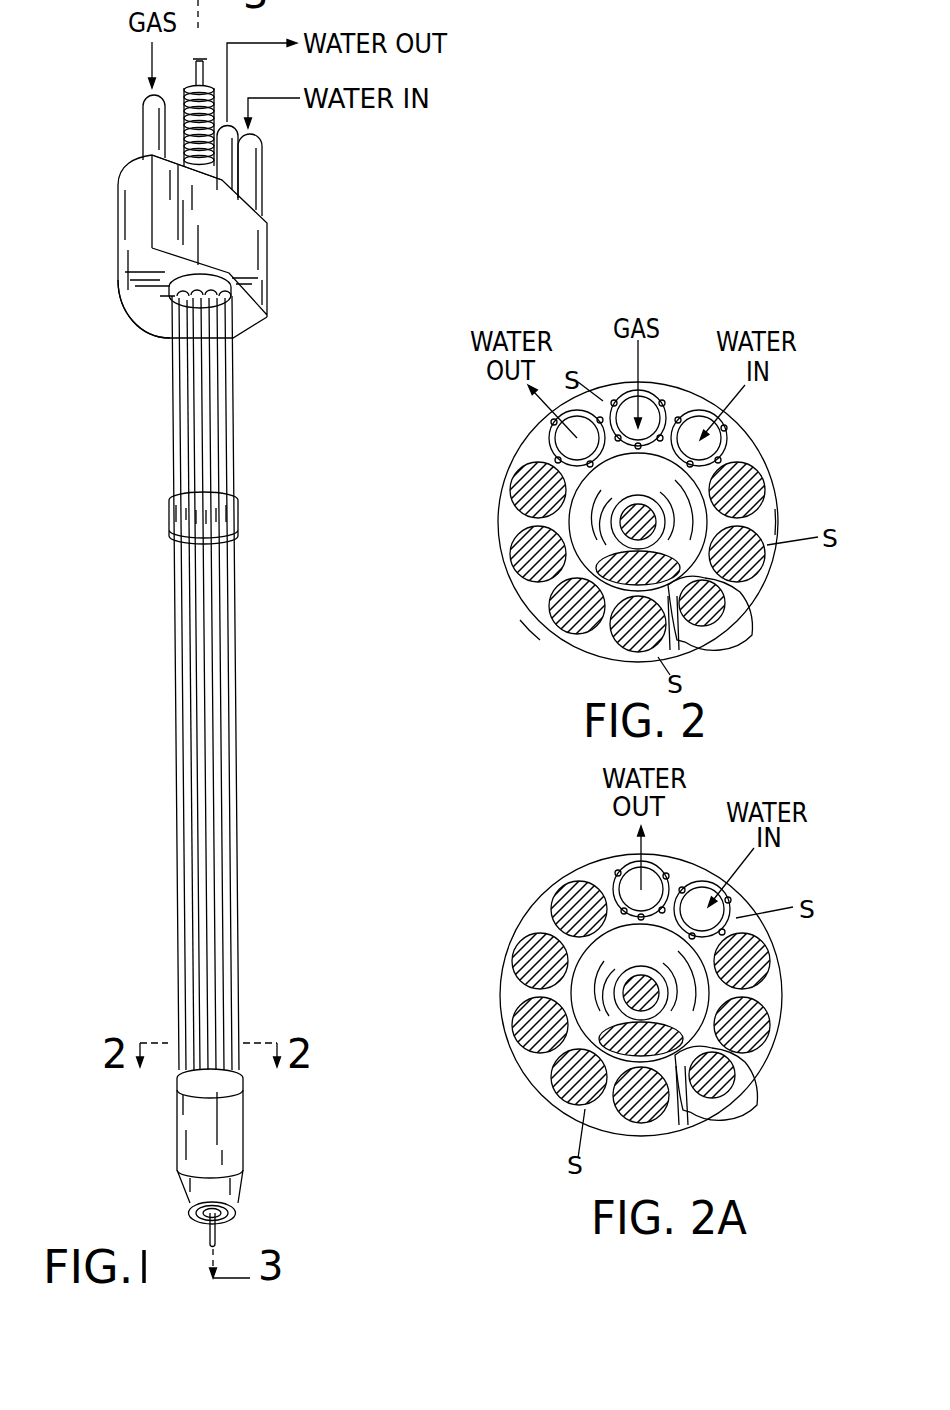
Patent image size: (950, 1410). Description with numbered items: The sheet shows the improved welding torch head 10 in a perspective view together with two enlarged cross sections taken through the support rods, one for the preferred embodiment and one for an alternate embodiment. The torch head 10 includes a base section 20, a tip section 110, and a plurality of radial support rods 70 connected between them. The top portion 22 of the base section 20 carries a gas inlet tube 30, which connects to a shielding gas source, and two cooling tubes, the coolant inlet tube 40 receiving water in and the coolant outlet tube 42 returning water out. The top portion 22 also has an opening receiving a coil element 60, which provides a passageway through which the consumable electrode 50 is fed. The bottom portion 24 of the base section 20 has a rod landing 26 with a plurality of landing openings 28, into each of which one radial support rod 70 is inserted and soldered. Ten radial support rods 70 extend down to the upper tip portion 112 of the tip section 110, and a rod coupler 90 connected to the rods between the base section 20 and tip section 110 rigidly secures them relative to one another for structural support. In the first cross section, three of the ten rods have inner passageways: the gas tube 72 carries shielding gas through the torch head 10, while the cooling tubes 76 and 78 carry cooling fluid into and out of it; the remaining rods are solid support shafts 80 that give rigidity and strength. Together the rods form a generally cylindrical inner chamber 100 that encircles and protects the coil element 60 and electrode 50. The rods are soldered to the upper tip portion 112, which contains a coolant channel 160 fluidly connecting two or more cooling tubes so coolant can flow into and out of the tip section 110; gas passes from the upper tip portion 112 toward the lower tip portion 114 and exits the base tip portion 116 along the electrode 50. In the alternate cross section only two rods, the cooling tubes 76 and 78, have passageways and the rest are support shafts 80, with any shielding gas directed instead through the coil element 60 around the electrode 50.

In FIG. 1, the torch head 10 is at (95, 608).
In FIG. 1, the base section 20 is at (209, 247).
In FIG. 1, the top portion 22 is at (125, 170).
In FIG. 1, the bottom portion 24 is at (130, 303).
In FIG. 1, the rod landing 26 is at (228, 286).
In FIG. 1, the landing openings 28 is at (190, 297).
In FIG. 1, the gas inlet tube 30 is at (143, 107).
In FIG. 1, the coolant inlet tube 40 is at (253, 185).
In FIG. 1, the coolant outlet tube 42 is at (228, 162).
In FIG. 1, the electrode 50 is at (203, 72).
In FIG. 2, the electrode 50 is at (648, 520).
In FIG. 2A, the electrode 50 is at (660, 992).
In FIG. 1, the coil element 60 is at (185, 133).
In FIG. 2, the coil element 60 is at (685, 540).
In FIG. 2A, the coil element 60 is at (585, 989).
In FIG. 1, the radial support rods 70 is at (242, 425).
In FIG. 2, the radial support rods 70 is at (787, 505).
In FIG. 2, the gas tube 72 is at (624, 398).
In FIG. 2, the cooling tube 76 is at (693, 411).
In FIG. 2A, the cooling tube 76 is at (728, 896).
In FIG. 2, the cooling tube 78 is at (548, 452).
In FIG. 2A, the cooling tube 78 is at (658, 858).
In FIG. 2, the support shaft 80 is at (520, 533).
In FIG. 2A, the support shaft 80 is at (533, 944).
In FIG. 1, the rod coupler 90 is at (238, 520).
In FIG. 2, the inner chamber 100 is at (681, 611).
In FIG. 1, the tip section 110 is at (216, 1151).
In FIG. 2, the tip section 110 is at (492, 597).
In FIG. 2A, the tip section 110 is at (490, 1035).
In FIG. 1, the upper tip portion 112 is at (180, 1088).
In FIG. 2, the upper tip portion 112 is at (520, 610).
In FIG. 1, the lower tip portion 114 is at (238, 1193).
In FIG. 1, the base tip portion 116 is at (192, 1217).
In FIG. 2, the coolant channel 160 is at (713, 617).
In FIG. 2A, the coolant channel 160 is at (718, 1087).